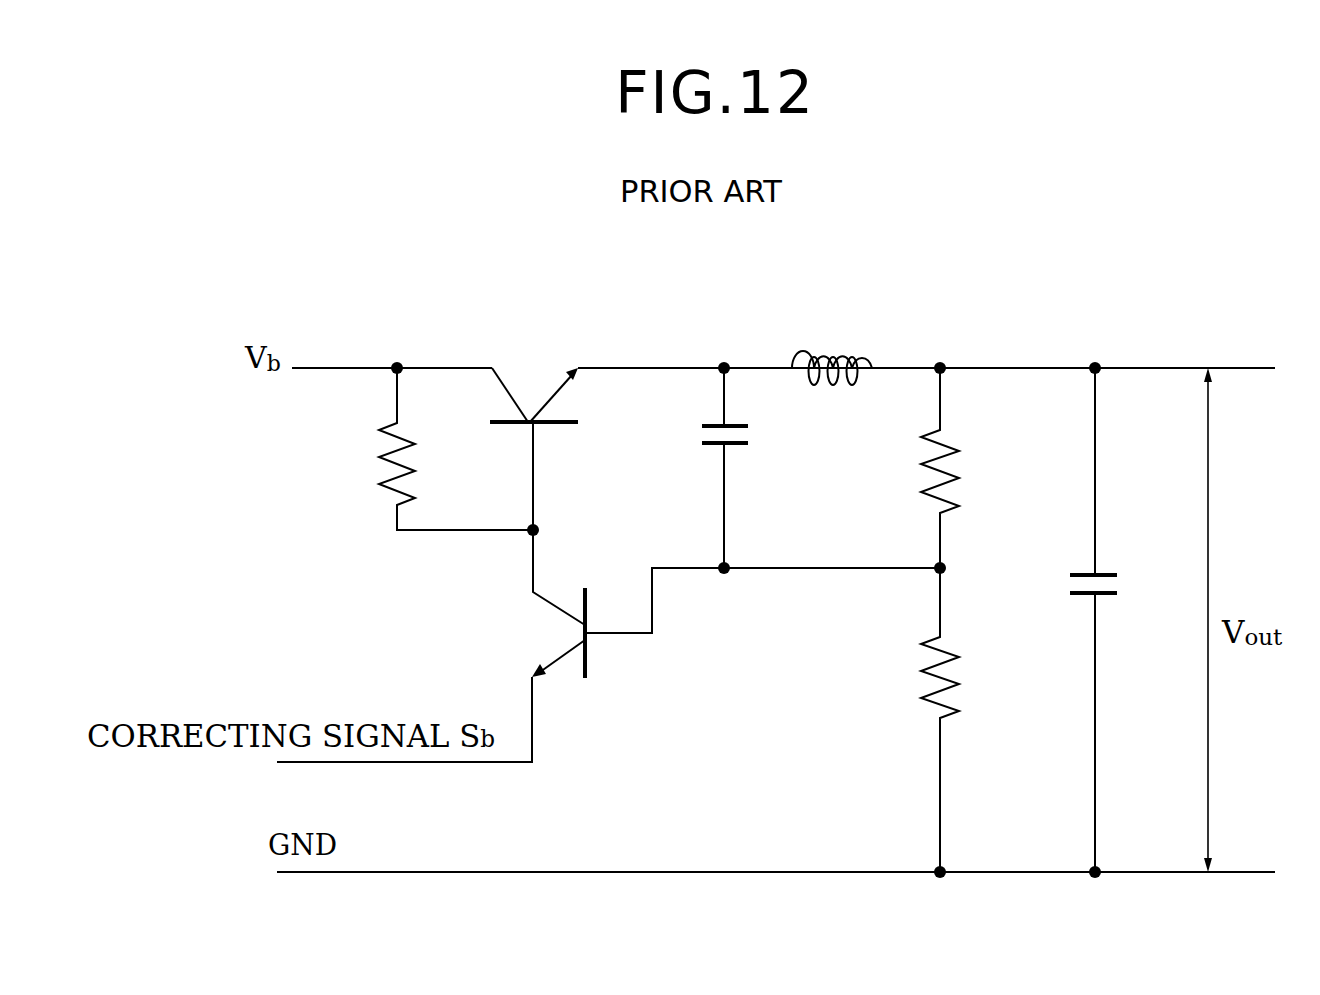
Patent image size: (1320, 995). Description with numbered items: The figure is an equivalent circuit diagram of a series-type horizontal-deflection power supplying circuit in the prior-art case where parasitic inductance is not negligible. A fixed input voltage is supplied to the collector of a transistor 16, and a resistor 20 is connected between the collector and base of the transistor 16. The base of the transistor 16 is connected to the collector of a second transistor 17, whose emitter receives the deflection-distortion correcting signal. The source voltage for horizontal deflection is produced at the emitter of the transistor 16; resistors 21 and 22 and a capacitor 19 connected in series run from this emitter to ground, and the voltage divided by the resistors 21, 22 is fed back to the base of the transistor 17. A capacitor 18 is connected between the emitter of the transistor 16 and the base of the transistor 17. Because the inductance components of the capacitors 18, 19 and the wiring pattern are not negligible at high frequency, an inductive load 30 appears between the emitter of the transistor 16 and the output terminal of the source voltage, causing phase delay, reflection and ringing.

The transistor 16 is at (533, 382).
The transistor 17 is at (552, 635).
The capacitor 18 is at (693, 435).
The capacitor 19 is at (1123, 580).
The resistor 20 is at (380, 470).
The resistor 21 is at (957, 472).
The resistor 22 is at (955, 672).
The inductive load 30 is at (835, 350).